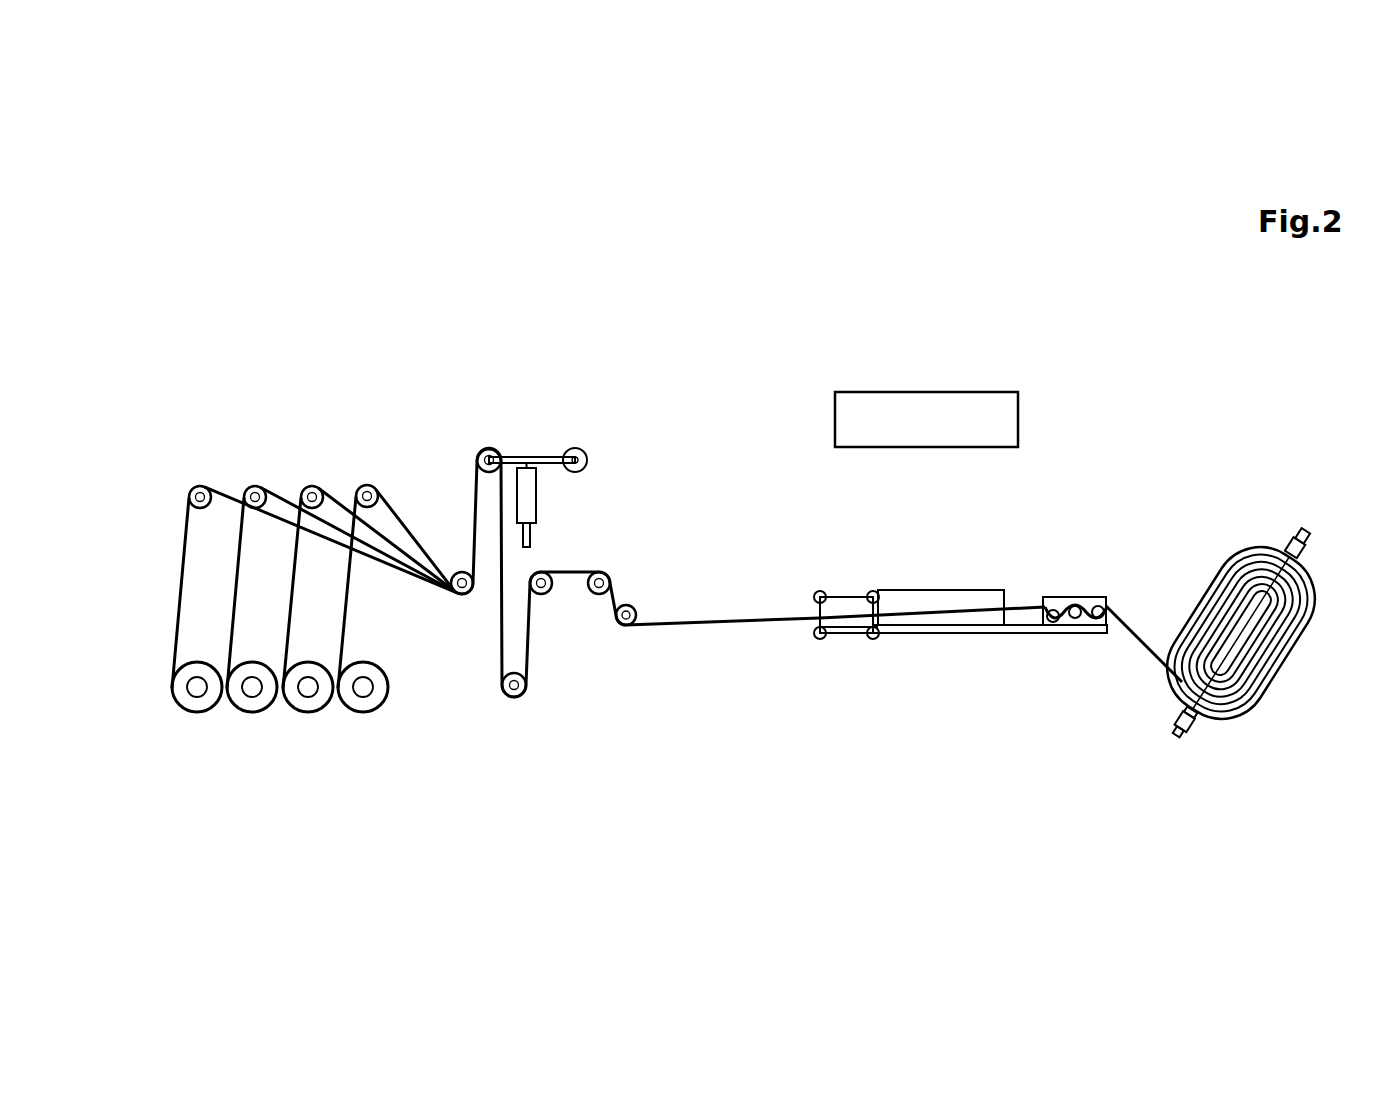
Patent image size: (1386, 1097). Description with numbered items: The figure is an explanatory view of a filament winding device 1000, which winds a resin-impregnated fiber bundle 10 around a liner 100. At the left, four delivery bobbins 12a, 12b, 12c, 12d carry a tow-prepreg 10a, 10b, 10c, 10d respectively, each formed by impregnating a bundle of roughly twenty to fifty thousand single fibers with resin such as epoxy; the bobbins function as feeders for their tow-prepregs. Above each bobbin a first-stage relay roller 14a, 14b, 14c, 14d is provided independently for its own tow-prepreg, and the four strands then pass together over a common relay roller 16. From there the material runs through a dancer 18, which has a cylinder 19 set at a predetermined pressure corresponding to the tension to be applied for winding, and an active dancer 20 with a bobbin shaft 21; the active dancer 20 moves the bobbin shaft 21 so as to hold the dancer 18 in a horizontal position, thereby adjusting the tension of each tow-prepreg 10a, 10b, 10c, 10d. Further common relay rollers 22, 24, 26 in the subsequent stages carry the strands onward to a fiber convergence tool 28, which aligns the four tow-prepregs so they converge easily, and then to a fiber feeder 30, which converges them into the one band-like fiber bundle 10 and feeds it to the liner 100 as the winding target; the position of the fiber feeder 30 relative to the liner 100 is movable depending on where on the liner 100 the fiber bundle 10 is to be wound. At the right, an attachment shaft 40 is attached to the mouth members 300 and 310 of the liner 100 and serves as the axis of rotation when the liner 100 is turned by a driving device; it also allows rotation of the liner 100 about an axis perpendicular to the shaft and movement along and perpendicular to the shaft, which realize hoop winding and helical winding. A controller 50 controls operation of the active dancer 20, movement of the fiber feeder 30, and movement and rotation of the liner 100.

The tow-prepreg 10a is at (184, 526).
The tow-prepreg 10b is at (236, 562).
The tow-prepreg 10c is at (292, 578).
The tow-prepreg 10d is at (346, 600).
The fiber bundle 10 is at (700, 630).
The delivery bobbin 12a is at (197, 690).
The delivery bobbin 12b is at (252, 690).
The delivery bobbin 12c is at (308, 690).
The delivery bobbin 12d is at (363, 690).
The relay roller 14a is at (196, 484).
The relay roller 14b is at (252, 484).
The relay roller 14c is at (308, 484).
The relay roller 14d is at (364, 483).
The relay roller 16 is at (455, 597).
The dancer 18 is at (588, 418).
The cylinder 19 is at (537, 496).
The active dancer 20 is at (550, 729).
The bobbin shaft 21 is at (511, 697).
The relay roller 22 is at (542, 568).
The relay roller 24 is at (600, 568).
The relay roller 26 is at (628, 601).
The fiber convergence tool 28 is at (842, 585).
The fiber feeder 30 is at (1043, 513).
The attachment shaft 40 is at (1300, 524).
The controller 50 is at (967, 392).
The liner 100 is at (1215, 741).
The mouth member 300 is at (1188, 716).
The mouth member 310 is at (1288, 534).
The filament winding device 1000 is at (1116, 350).